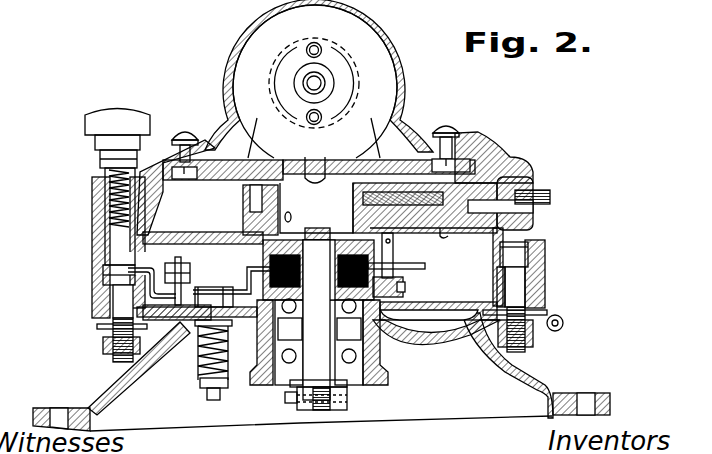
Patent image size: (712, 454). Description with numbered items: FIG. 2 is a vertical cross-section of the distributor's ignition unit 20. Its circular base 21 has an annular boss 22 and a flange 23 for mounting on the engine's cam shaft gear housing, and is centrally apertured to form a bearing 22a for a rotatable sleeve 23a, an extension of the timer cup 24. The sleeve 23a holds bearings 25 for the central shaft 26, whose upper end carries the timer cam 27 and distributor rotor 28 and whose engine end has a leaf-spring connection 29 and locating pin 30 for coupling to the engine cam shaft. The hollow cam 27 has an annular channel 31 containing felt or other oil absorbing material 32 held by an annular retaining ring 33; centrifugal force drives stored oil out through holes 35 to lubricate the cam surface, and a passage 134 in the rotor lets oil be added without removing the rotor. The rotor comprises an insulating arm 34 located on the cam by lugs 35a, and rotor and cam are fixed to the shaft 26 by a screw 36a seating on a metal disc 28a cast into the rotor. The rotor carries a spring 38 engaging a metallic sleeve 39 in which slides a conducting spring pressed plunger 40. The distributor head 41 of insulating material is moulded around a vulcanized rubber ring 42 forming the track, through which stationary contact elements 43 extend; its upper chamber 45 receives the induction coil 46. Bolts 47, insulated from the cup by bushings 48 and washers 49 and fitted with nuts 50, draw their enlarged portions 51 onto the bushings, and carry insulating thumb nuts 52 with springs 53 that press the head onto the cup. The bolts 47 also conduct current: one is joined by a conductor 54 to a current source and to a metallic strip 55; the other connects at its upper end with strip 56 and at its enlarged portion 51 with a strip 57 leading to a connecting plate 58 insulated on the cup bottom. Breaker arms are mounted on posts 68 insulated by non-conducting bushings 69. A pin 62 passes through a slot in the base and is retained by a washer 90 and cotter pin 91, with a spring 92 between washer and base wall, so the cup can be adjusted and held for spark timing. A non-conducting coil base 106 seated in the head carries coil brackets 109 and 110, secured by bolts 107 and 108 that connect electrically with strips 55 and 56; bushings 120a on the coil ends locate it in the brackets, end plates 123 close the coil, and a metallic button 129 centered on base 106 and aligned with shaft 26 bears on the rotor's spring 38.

The ignition unit 20 is at (98, 203).
The circular base 21 is at (532, 380).
The annular boss 22 is at (556, 417).
The bearing 22a is at (382, 345).
The flange 23 is at (600, 402).
The rotatable sleeve 23a is at (377, 355).
The timer cup 24 is at (541, 283).
The bearings 25 is at (291, 360).
The central shaft 26 is at (330, 355).
The timer cam 27 is at (268, 260).
The distributor rotor 28 is at (243, 205).
The metal disc 28a is at (352, 233).
The leaf-spring connection 29 is at (323, 410).
The locating pin 30 is at (294, 396).
The annular channel 31 is at (268, 272).
The oil absorbing material 32 is at (398, 272).
The annular retaining ring 33 is at (268, 293).
The rotor arm 34 is at (445, 232).
The cam wall apertures 35 is at (450, 258).
The lugs 35a is at (394, 245).
The screw 36a is at (318, 270).
The rotor spring 38 is at (304, 183).
The metallic sleeve 39 is at (463, 198).
The spring pressed plunger 40 is at (452, 207).
The distributor head 41 is at (418, 74).
The vulcanized rubber ring 42 is at (482, 212).
The stationary contact elements 43 is at (549, 197).
The interior chamber 45 is at (230, 110).
The induction coil 46 is at (381, 46).
The bolts 47 is at (118, 273).
The bushings 48 is at (112, 302).
The washers 49 is at (96, 330).
The nuts 50 is at (108, 350).
The enlarged portions 51 is at (118, 256).
The thumb nuts 52 is at (103, 143).
The springs 53 is at (103, 168).
The conductor 54 is at (563, 322).
The metallic strip 55 is at (471, 152).
The strip 56 is at (155, 148).
The strip 57 is at (162, 262).
The connecting plate 58 is at (189, 274).
The pin 62 is at (206, 392).
The posts 68 is at (392, 256).
The non-conducting bushings 69 is at (405, 296).
The washers 90 is at (224, 384).
The cotter pins 91 is at (214, 393).
The springs 92 is at (205, 356).
The coil base 106 is at (216, 181).
The bolt 107 is at (448, 124).
The bolt 108 is at (183, 128).
The coil bracket 109 is at (411, 127).
The coil bracket 110 is at (221, 133).
The bushings 120a is at (313, 43).
The end plates 123 is at (336, 73).
The metallic button 129 is at (336, 118).
The oil passage 134 is at (291, 220).